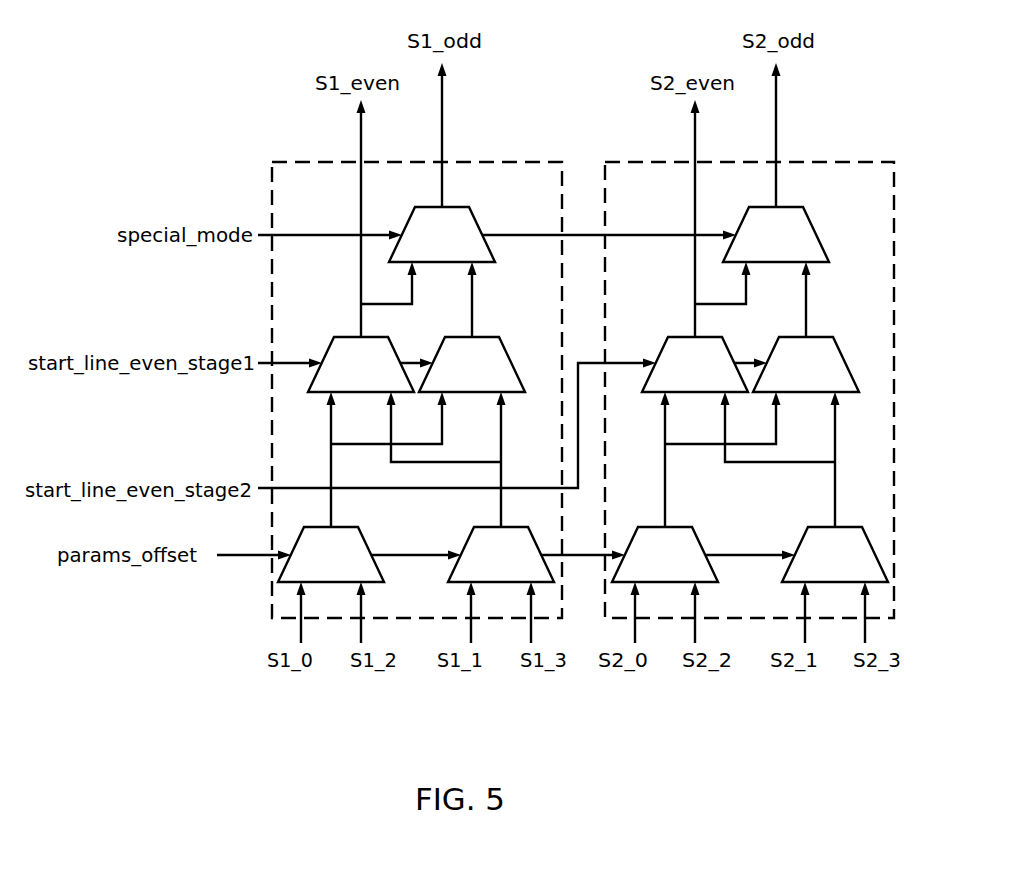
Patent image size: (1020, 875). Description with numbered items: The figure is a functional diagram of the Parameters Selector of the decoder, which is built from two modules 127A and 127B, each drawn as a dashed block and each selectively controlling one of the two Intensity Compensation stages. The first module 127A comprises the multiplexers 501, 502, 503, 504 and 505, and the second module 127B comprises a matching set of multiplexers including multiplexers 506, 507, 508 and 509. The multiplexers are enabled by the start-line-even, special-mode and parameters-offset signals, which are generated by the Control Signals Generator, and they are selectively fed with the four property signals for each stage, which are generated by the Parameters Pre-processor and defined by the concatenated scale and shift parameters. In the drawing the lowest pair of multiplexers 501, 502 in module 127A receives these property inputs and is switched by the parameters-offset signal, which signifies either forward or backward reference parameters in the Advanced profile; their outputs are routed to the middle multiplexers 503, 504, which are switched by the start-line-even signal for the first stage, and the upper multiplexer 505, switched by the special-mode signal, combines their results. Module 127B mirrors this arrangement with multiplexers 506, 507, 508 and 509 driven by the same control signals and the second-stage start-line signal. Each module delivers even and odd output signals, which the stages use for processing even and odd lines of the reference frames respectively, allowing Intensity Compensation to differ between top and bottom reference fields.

The module 127A is at (315, 162).
The module 127B is at (843, 162).
The multiplexer 501 is at (350, 527).
The multiplexer 502 is at (457, 583).
The multiplexer 503 is at (342, 336).
The multiplexer 504 is at (490, 336).
The multiplexer 505 is at (460, 206).
The multiplexer 506 is at (790, 583).
The multiplexer 507 is at (676, 336).
The multiplexer 508 is at (823, 336).
The multiplexer 509 is at (795, 206).